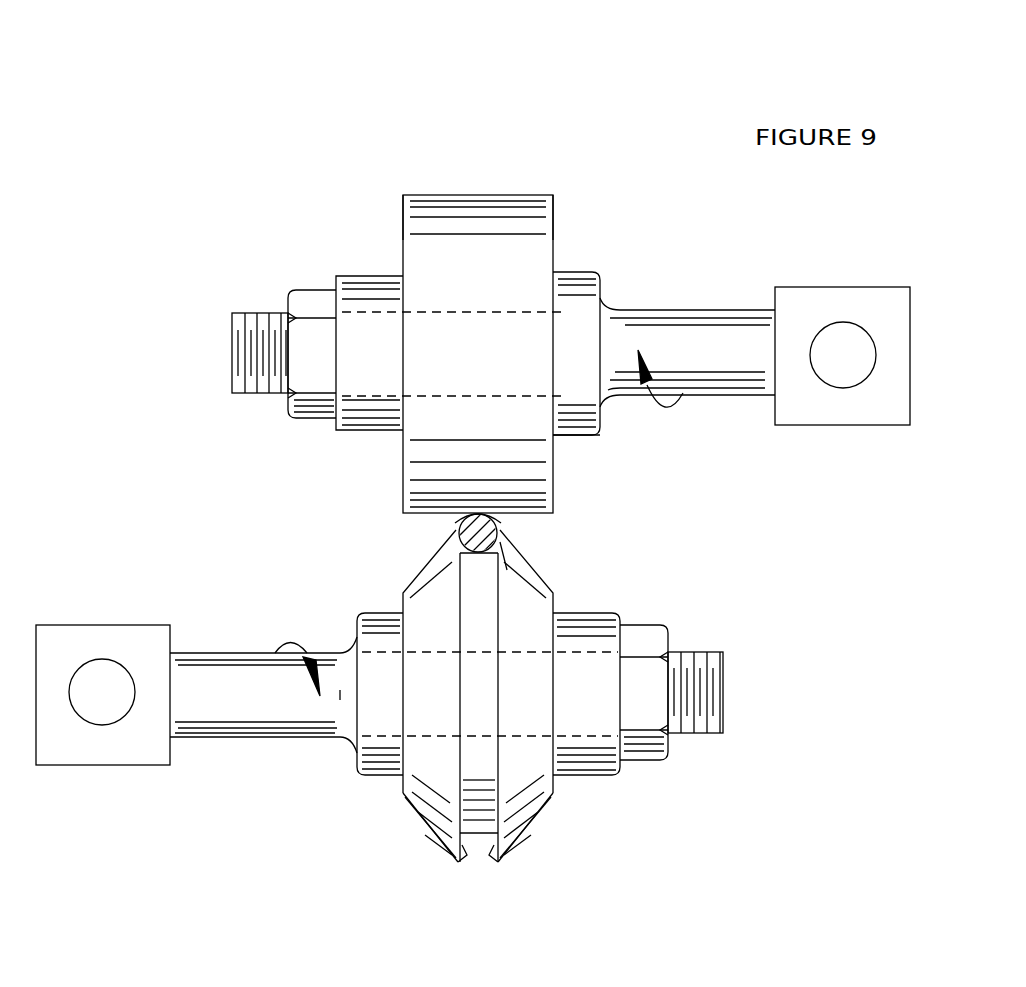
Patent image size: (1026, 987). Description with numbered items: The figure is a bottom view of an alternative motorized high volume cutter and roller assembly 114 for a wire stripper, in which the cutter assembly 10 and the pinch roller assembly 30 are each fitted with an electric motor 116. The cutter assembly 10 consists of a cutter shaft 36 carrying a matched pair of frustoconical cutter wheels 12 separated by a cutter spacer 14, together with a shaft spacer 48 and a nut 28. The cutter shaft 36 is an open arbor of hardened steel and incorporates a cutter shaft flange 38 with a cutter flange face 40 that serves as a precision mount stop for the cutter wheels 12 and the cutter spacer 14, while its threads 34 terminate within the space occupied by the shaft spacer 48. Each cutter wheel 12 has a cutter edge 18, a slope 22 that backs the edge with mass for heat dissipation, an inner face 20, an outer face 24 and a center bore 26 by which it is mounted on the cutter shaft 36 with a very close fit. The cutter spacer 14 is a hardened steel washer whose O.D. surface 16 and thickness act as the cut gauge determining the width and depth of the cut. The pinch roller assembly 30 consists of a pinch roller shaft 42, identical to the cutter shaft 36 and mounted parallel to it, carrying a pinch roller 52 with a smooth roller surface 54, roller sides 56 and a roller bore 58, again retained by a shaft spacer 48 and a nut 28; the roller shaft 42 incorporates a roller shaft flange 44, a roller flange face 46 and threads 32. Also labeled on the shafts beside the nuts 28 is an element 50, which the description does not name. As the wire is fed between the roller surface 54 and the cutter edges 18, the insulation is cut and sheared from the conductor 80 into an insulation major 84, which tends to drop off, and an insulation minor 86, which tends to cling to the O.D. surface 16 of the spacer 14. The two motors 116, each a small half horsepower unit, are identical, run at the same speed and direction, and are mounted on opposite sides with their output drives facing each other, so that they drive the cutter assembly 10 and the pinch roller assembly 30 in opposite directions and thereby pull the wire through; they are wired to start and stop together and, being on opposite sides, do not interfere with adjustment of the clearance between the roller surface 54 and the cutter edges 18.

The cutter assembly 10 is at (748, 687).
The cutter wheels 12 is at (538, 613).
The cutter spacer 14 is at (475, 603).
The O.D. surface 16 is at (478, 833).
The cutter edge 18 is at (430, 827).
The inner face 20 is at (468, 857).
The slope 22 is at (428, 827).
The outer face 24 is at (402, 790).
The center bore 26 is at (427, 650).
The nut 28 is at (302, 403).
The pinch roller assembly 30 is at (215, 352).
The threads 32 is at (257, 330).
The threads 34 is at (707, 712).
The cutter shaft 36 is at (228, 667).
The cutter shaft flange 38 is at (377, 712).
The cutter flange face 40 is at (402, 683).
The pinch roller shaft 42 is at (723, 380).
The roller shaft flange 44 is at (583, 415).
The roller flange face 46 is at (541, 347).
The shaft spacer 48 is at (348, 425).
The coupling nut 50 is at (335, 284).
The pinch roller 52 is at (484, 213).
The roller surface 54 is at (436, 193).
The roller sides 56 is at (400, 218).
The roller bore 58 is at (478, 310).
The conductor 80 is at (503, 528).
The insulation major 84 is at (452, 527).
The insulation minor 86 is at (505, 570).
The motorized high volume cutter and roller assembly 114 is at (176, 145).
The electric motor 116 is at (870, 418).